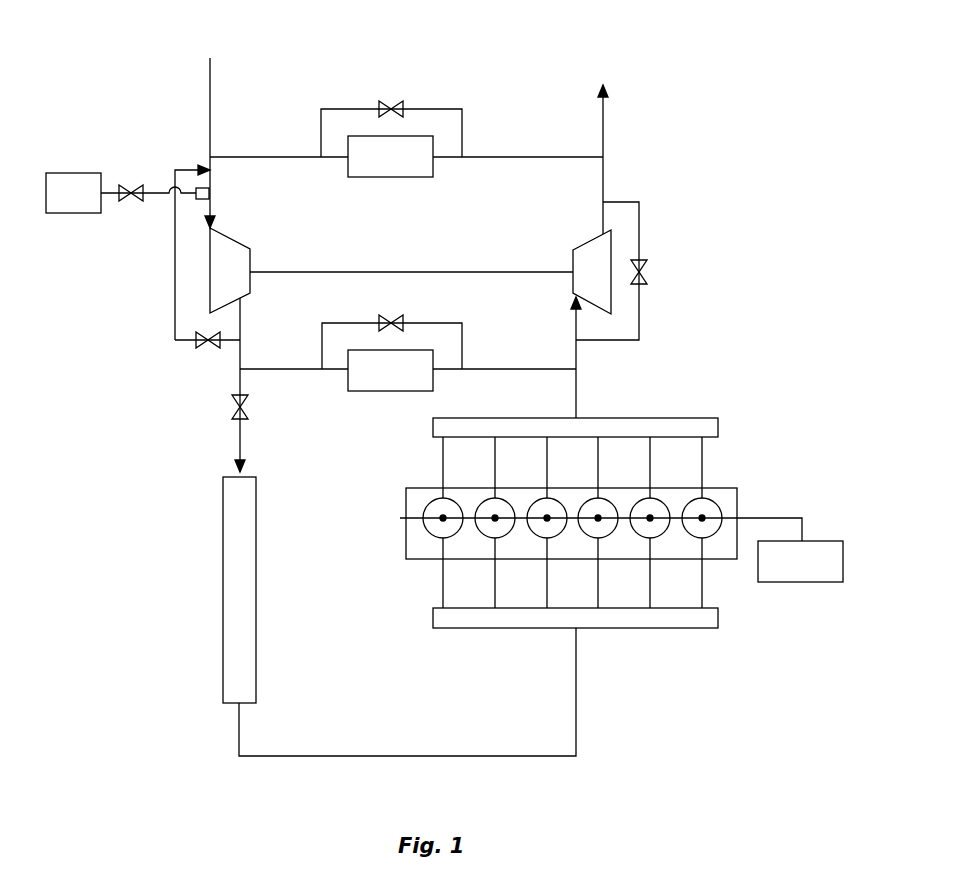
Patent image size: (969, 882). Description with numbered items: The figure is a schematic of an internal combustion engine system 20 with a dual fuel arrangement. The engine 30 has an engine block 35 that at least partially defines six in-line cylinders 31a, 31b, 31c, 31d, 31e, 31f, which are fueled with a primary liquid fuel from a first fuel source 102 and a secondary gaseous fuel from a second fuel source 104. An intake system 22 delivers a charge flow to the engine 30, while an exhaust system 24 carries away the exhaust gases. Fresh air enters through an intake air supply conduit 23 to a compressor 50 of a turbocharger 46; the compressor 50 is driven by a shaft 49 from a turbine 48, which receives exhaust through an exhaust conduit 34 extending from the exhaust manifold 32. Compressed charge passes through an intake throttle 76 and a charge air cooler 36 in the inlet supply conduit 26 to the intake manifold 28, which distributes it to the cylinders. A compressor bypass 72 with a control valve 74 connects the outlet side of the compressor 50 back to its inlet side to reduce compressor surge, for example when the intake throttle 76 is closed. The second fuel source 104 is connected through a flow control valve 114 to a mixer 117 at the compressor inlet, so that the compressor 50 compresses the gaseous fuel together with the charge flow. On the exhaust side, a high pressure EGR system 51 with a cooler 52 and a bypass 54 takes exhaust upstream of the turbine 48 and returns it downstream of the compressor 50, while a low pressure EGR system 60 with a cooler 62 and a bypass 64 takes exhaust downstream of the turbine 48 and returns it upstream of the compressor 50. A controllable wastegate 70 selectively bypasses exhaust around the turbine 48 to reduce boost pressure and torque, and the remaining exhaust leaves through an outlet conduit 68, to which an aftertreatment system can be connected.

The internal combustion engine system 20 is at (610, 519).
The intake system 22 is at (197, 692).
The intake air supply conduit 23 is at (210, 100).
The exhaust system 24 is at (650, 165).
The inlet supply conduit 26 is at (576, 700).
The intake manifold 28 is at (665, 628).
The engine 30 is at (406, 522).
The cylinder 31a is at (695, 527).
The cylinder 31b is at (640, 525).
The cylinder 31c is at (590, 530).
The cylinder 31d is at (543, 528).
The cylinder 31e is at (490, 530).
The cylinder 31f is at (450, 518).
The exhaust manifold 32 is at (660, 418).
The exhaust conduit 34 is at (576, 410).
The engine block 35 is at (720, 488).
The charge air cooler 36 is at (223, 585).
The turbocharger 46 is at (398, 250).
The turbine 48 is at (592, 272).
The shaft 49 is at (318, 272).
The compressor 50 is at (230, 270).
The high pressure EGR system 51 is at (408, 368).
The cooler 52 is at (420, 378).
The bypass 54 is at (445, 323).
The low pressure EGR system 60 is at (407, 103).
The cooler 62 is at (420, 165).
The bypass 64 is at (440, 109).
The outlet conduit 68 is at (604, 138).
The wastegate 70 is at (639, 225).
The compressor bypass 72 is at (175, 325).
The control valve 74 is at (205, 348).
The intake throttle 76 is at (232, 412).
The first fuel source 102 is at (805, 540).
The second fuel source 104 is at (78, 173).
The flow control valve 114 is at (134, 185).
The mixer 117 is at (210, 193).